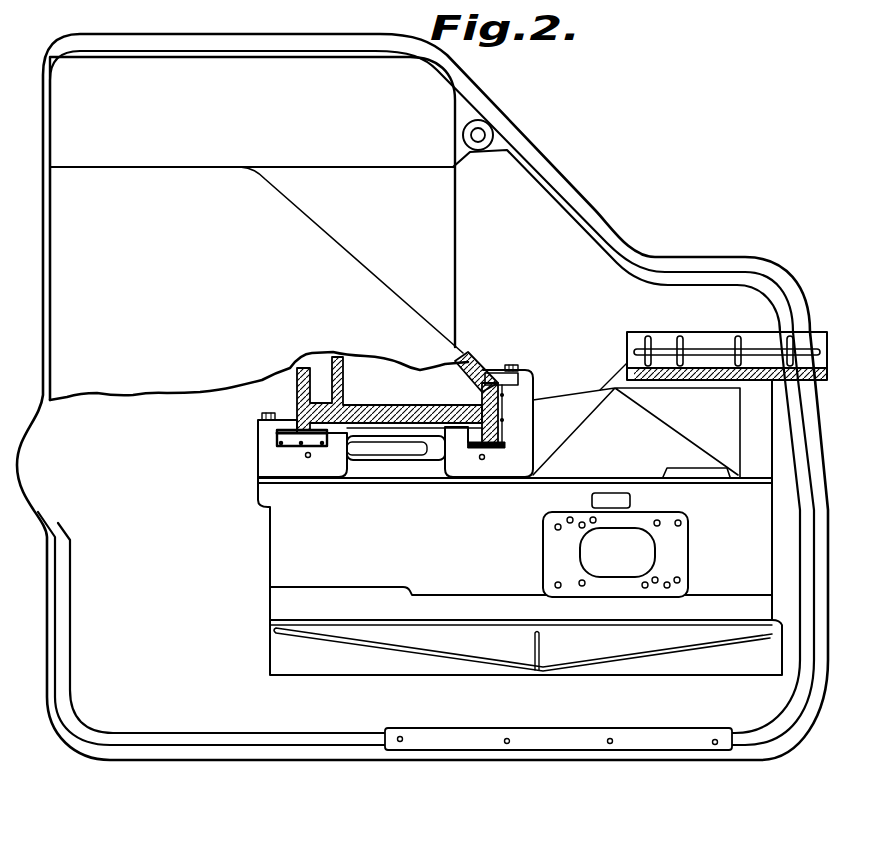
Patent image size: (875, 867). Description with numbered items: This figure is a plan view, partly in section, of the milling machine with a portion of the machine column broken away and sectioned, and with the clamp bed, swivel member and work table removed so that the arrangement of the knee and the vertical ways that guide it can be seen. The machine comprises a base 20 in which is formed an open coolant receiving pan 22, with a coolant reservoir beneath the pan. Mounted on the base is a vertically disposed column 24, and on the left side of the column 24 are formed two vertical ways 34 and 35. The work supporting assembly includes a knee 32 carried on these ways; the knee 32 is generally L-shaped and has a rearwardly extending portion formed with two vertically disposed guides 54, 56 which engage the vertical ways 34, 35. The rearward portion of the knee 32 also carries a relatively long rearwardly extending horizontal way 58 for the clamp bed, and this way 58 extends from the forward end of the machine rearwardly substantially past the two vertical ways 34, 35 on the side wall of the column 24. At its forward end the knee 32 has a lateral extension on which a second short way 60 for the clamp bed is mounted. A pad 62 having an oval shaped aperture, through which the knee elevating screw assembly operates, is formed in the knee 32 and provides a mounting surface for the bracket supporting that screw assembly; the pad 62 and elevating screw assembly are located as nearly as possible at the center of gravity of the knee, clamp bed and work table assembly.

The base 20 is at (590, 208).
The coolant receiving pan 22 is at (590, 268).
The column 24 is at (68, 237).
The knee 32 is at (283, 540).
The vertical way 34 is at (258, 432).
The vertical way 35 is at (483, 370).
The vertically disposed guide 54 is at (277, 458).
The vertically disposed guide 56 is at (471, 460).
The horizontal way 58 is at (287, 653).
The second short way 60 is at (717, 340).
The pad 62 is at (672, 553).